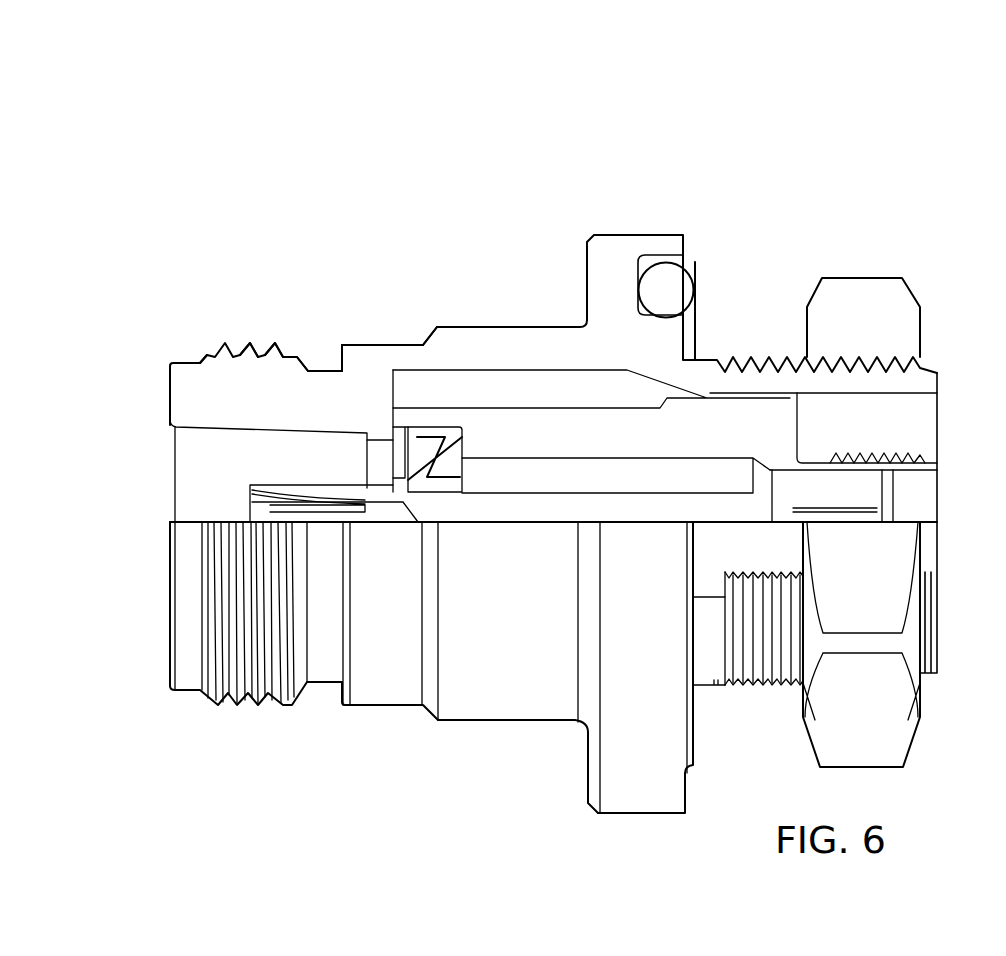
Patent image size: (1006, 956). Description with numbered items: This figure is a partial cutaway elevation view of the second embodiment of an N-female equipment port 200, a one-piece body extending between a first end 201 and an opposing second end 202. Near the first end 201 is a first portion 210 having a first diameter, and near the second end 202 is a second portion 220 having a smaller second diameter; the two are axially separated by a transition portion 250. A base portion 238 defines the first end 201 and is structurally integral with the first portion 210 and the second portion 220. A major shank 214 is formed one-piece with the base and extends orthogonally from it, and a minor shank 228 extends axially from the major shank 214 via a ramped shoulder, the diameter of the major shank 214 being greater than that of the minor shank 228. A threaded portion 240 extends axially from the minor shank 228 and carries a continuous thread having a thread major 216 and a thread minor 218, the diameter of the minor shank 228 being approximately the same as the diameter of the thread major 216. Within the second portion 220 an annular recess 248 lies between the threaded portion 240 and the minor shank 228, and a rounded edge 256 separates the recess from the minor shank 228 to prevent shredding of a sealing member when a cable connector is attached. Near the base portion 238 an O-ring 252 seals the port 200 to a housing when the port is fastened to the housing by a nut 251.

The equipment port 200 is at (957, 92).
The first end 201 is at (158, 105).
The second end 202 is at (676, 181).
The first portion 210 is at (490, 276).
The major shank 214 is at (540, 327).
The thread major 216 is at (285, 355).
The thread minor 218 is at (248, 355).
The second portion 220 is at (276, 220).
The minor shank 228 is at (382, 345).
The base portion 238 is at (608, 245).
The threaded portion 240 is at (205, 358).
The annular recess 248 is at (330, 370).
The transition portion 250 is at (422, 345).
The nut 251 is at (865, 290).
The O-ring 252 is at (672, 290).
The rounded edge 256 is at (344, 368).